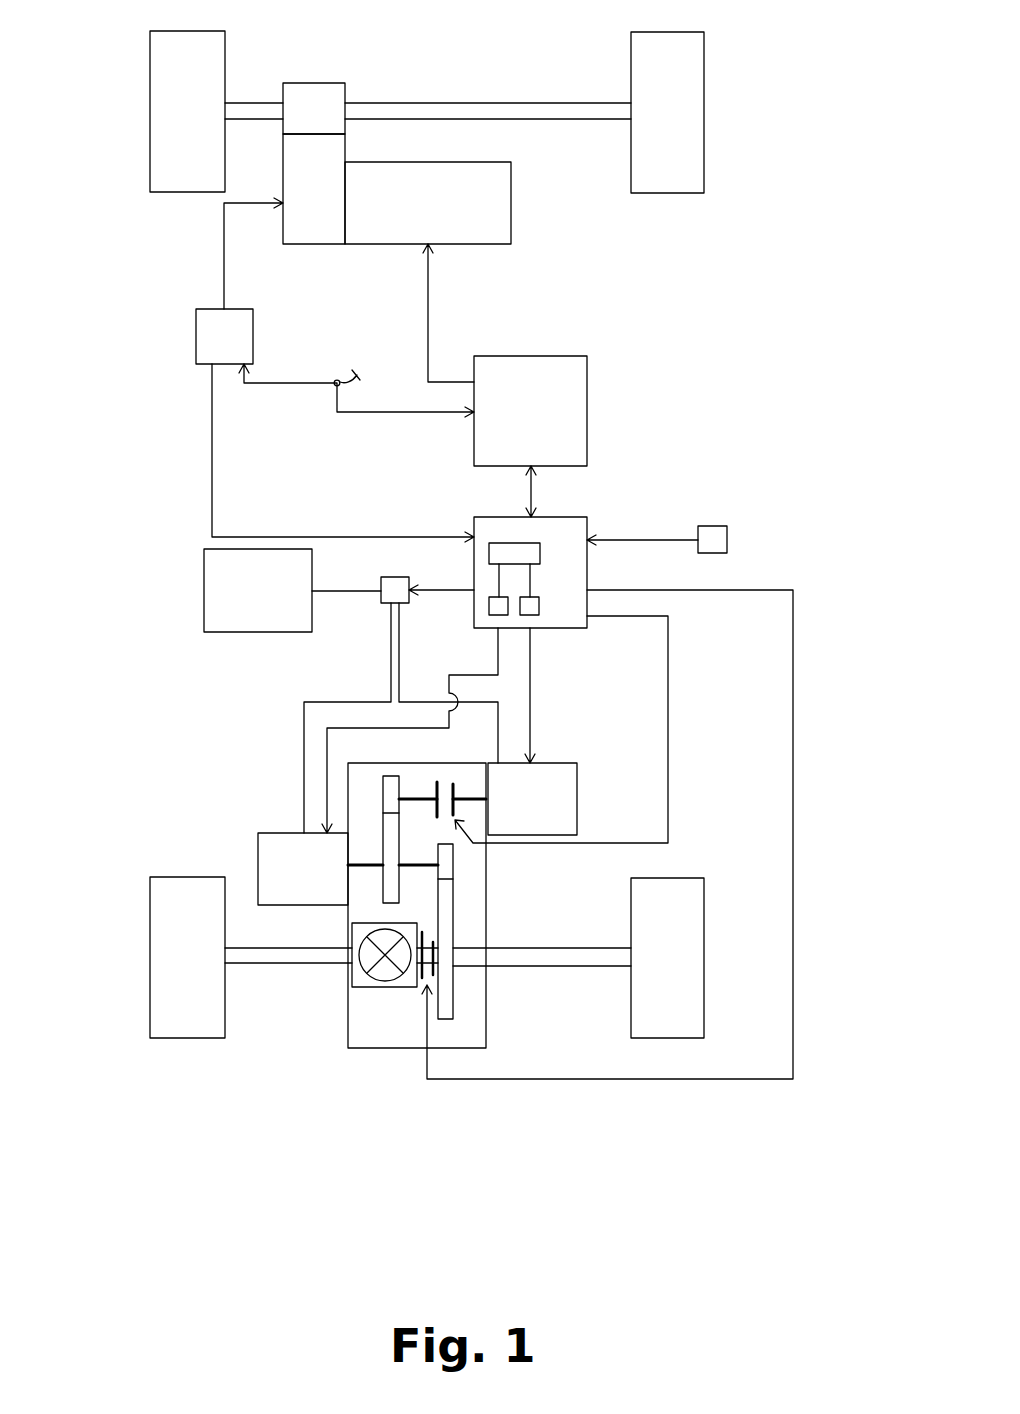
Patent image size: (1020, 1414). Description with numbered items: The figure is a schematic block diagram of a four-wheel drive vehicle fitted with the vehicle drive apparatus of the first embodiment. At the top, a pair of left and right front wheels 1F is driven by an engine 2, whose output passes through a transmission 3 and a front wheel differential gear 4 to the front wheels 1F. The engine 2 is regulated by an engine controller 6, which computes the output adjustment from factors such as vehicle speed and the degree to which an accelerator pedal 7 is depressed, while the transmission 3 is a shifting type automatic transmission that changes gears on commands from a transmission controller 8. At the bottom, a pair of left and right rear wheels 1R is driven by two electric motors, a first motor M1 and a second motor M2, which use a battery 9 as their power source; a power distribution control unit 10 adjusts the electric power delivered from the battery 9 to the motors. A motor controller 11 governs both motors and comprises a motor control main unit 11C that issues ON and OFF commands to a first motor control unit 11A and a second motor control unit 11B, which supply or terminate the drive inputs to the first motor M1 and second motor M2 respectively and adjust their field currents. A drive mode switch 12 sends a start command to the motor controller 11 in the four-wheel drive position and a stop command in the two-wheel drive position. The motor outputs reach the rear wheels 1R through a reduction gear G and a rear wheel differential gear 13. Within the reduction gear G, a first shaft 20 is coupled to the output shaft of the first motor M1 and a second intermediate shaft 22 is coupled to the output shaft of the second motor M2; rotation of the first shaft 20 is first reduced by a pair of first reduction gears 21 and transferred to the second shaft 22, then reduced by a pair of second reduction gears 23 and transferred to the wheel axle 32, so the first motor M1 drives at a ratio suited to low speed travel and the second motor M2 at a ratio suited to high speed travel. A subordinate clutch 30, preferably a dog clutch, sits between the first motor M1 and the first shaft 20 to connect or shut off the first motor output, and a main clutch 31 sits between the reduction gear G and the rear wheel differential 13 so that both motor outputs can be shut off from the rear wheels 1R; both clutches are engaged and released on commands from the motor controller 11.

The front wheels 1F is at (150, 103).
The rear wheels 1R is at (150, 952).
The engine 2 is at (511, 212).
The transmission 3 is at (345, 150).
The front wheel differential gear 4 is at (320, 83).
The engine controller 6 is at (587, 410).
The accelerator pedal 7 is at (350, 375).
The transmission controller 8 is at (196, 341).
The battery 9 is at (204, 595).
The power distribution control unit 10 is at (385, 577).
The motor controller 11 is at (535, 559).
The first motor control unit 11A is at (539, 603).
The second motor control unit 11B is at (489, 606).
The motor control main unit 11C is at (493, 543).
The drive mode switch 12 is at (727, 540).
The rear wheel differential gear 13 is at (367, 987).
The first shaft 20 is at (428, 799).
The first reduction gears 21 is at (383, 843).
The second intermediate shaft 22 is at (428, 865).
The second reduction gears 23 is at (453, 865).
The subordinate clutch 30 is at (447, 790).
The main clutch 31 is at (425, 980).
The wheel axle 32 is at (603, 948).
The first motor M1 is at (577, 812).
The second motor M2 is at (258, 855).
The reduction gear G is at (486, 1029).